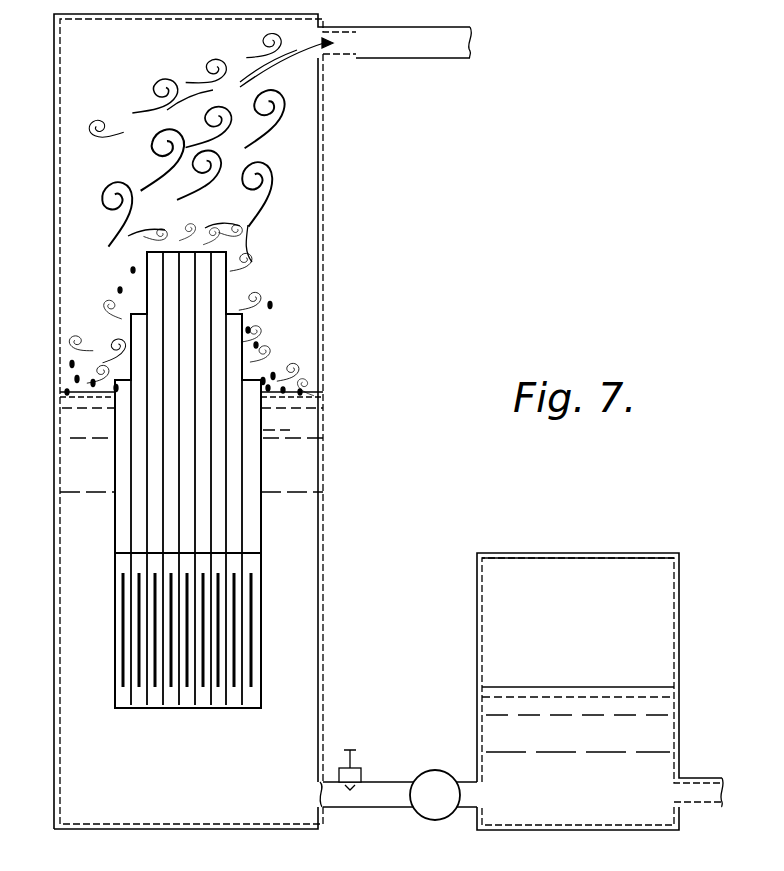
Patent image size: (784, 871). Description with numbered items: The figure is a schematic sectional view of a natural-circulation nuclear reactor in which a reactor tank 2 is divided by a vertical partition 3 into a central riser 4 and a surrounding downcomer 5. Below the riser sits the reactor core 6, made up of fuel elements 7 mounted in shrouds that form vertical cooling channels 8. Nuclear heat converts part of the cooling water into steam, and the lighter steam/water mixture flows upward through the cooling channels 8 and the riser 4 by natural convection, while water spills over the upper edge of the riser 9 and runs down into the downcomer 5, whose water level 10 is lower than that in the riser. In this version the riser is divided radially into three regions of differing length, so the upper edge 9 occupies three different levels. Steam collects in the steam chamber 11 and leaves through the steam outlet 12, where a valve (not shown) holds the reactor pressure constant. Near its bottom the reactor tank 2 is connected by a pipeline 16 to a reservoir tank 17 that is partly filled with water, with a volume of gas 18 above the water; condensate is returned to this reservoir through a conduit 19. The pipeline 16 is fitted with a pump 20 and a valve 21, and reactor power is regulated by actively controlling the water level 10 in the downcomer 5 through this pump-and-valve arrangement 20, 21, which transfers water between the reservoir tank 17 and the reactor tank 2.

The reactor tank 2 is at (322, 504).
The vertical partition 3 is at (263, 468).
The riser 4 is at (187, 413).
The downcomer 5 is at (295, 429).
The reactor core 6 is at (185, 618).
The fuel elements 7 is at (255, 637).
The cooling channels 8 is at (250, 697).
The upper edge of the riser 9 is at (263, 367).
The water level in the downcomer 10 is at (315, 380).
The steam chamber 11 is at (292, 163).
The steam outlet 12 is at (426, 58).
The pipeline 16 is at (385, 782).
The reservoir tank 17 is at (478, 645).
The volume of gas 18 is at (500, 574).
The conduit 19 is at (700, 778).
The pump 20 is at (437, 770).
The valve 21 is at (380, 722).